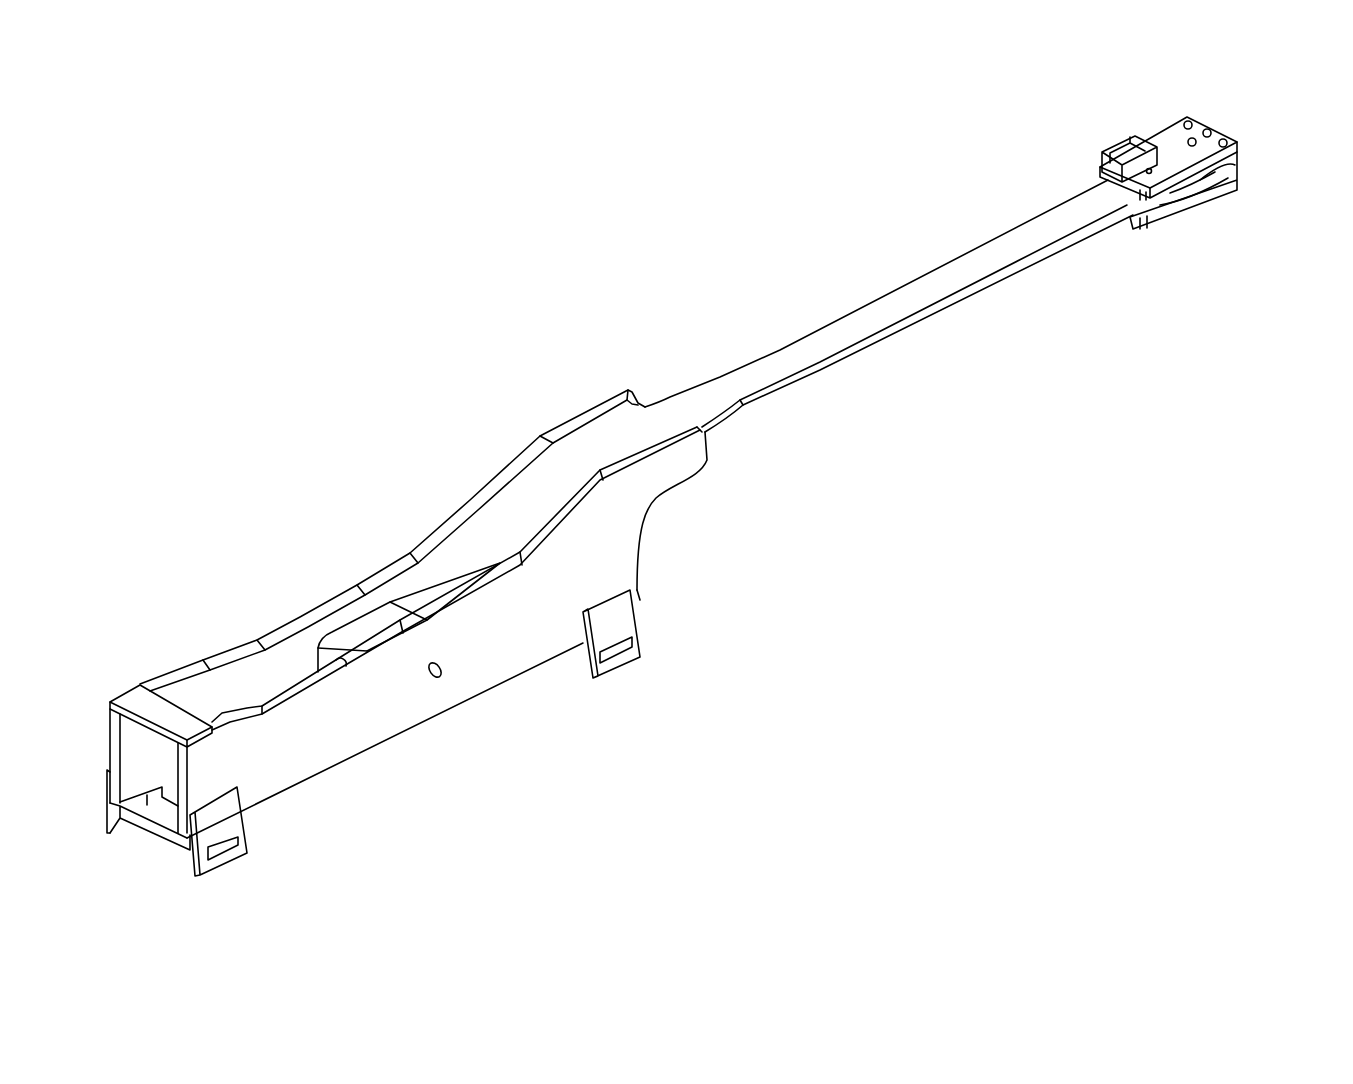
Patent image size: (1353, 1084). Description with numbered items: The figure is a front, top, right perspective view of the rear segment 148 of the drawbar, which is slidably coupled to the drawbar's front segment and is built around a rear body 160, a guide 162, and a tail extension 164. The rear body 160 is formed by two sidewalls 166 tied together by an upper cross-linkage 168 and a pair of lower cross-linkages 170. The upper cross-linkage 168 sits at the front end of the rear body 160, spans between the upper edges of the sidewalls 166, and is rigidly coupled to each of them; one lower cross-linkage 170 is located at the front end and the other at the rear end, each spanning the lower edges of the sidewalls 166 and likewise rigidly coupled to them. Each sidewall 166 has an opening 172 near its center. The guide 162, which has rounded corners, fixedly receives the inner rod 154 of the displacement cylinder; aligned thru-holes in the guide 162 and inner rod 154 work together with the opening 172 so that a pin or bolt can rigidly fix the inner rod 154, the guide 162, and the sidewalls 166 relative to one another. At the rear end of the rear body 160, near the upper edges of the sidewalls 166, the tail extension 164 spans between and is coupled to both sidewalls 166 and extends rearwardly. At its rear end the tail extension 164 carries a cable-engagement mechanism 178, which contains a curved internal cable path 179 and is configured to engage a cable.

The rear segment 148 is at (302, 442).
The inner rod 154 is at (447, 600).
The rear body 160 is at (338, 776).
The guide 162 is at (373, 622).
The tail extension 164 is at (900, 298).
The sidewalls 166 is at (462, 510).
The upper cross-linkage 168 is at (167, 708).
The lower cross-linkages 170 is at (152, 823).
The opening 172 is at (442, 676).
The cable-engagement mechanism 178 is at (1158, 140).
The curved internal cable path 179 is at (1195, 191).